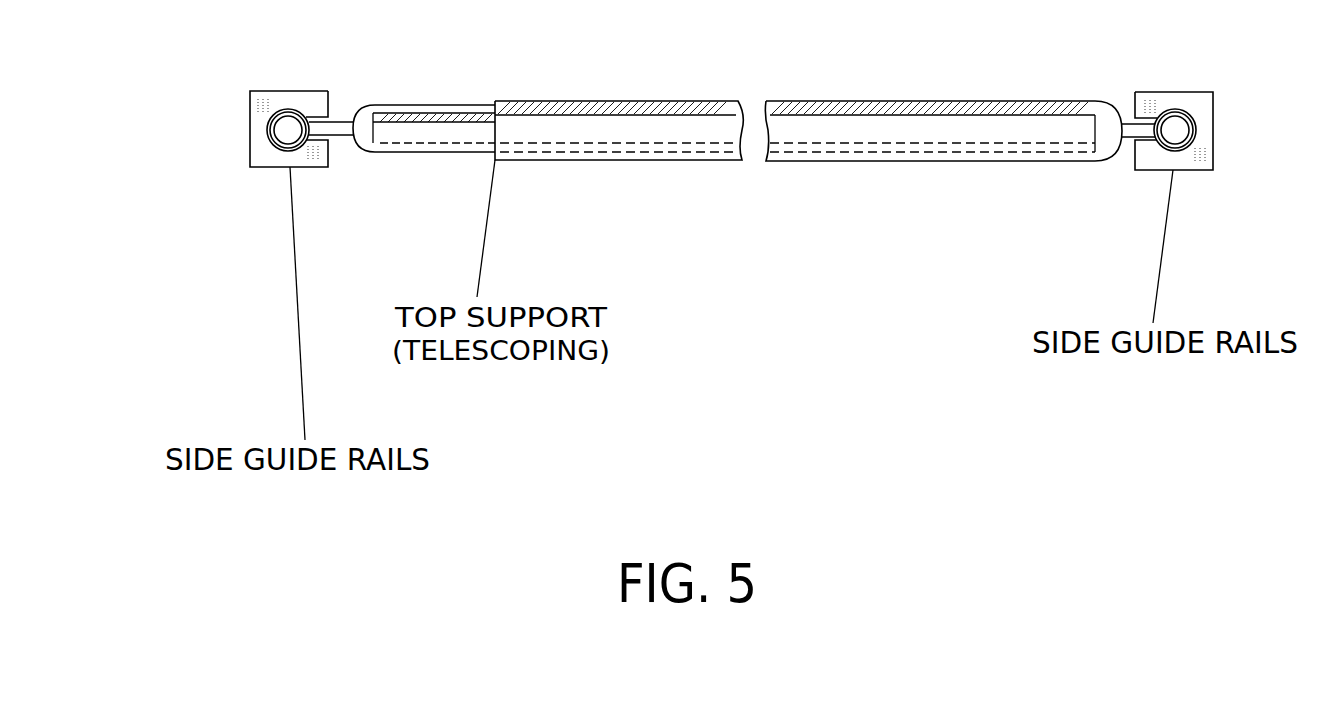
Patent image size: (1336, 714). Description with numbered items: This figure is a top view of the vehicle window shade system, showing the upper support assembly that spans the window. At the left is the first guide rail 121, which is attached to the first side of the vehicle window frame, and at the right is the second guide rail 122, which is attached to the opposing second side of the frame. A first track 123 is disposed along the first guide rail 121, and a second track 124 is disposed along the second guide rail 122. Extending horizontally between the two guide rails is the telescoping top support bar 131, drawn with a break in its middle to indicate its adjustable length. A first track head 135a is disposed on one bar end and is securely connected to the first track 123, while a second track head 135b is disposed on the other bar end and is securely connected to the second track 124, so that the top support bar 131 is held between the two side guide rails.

The first guide rail 121 is at (288, 100).
The second guide rail 122 is at (1190, 105).
The first track 123 is at (267, 130).
The second track 124 is at (1213, 130).
The telescoping top support bar 131 is at (603, 101).
The first track head 135a is at (284, 137).
The second track head 135b is at (1179, 141).